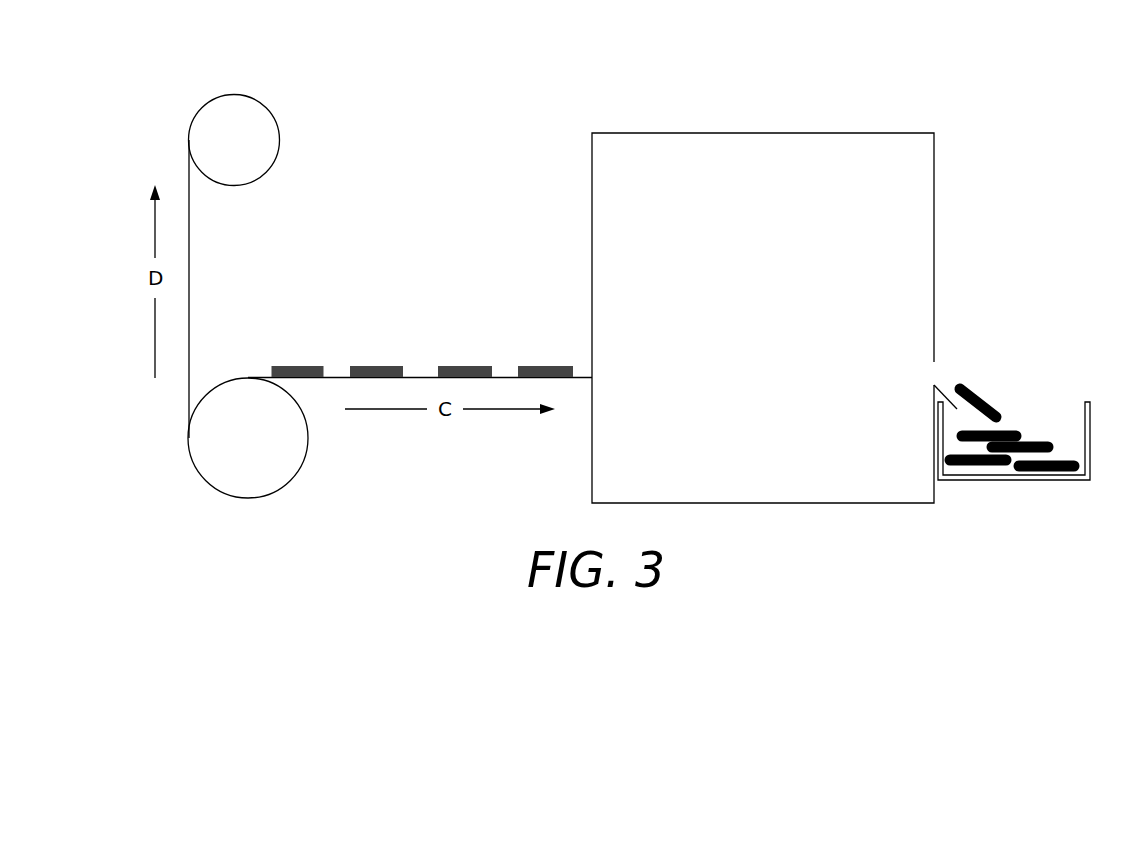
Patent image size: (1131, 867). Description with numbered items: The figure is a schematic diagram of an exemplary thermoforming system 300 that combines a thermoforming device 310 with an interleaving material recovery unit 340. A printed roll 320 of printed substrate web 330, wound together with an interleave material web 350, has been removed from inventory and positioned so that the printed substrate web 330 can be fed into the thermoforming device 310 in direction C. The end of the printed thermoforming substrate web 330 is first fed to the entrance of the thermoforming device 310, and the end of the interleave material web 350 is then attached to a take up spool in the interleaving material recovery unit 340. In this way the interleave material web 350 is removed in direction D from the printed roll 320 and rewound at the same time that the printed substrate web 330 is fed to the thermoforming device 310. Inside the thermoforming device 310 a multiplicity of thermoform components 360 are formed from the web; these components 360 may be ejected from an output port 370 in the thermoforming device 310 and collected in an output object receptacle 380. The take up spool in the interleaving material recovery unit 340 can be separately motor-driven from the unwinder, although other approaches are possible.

The thermoforming system 300 is at (430, 78).
The thermoforming device 310 is at (687, 133).
The printed roll 320 is at (282, 487).
The printed substrate web 330 is at (420, 377).
The interleaving material recovery unit 340 is at (272, 113).
The interleave material web 350 is at (190, 271).
The thermoform components 360 is at (1060, 460).
The output port 370 is at (933, 372).
The output object receptacle 380 is at (1010, 482).